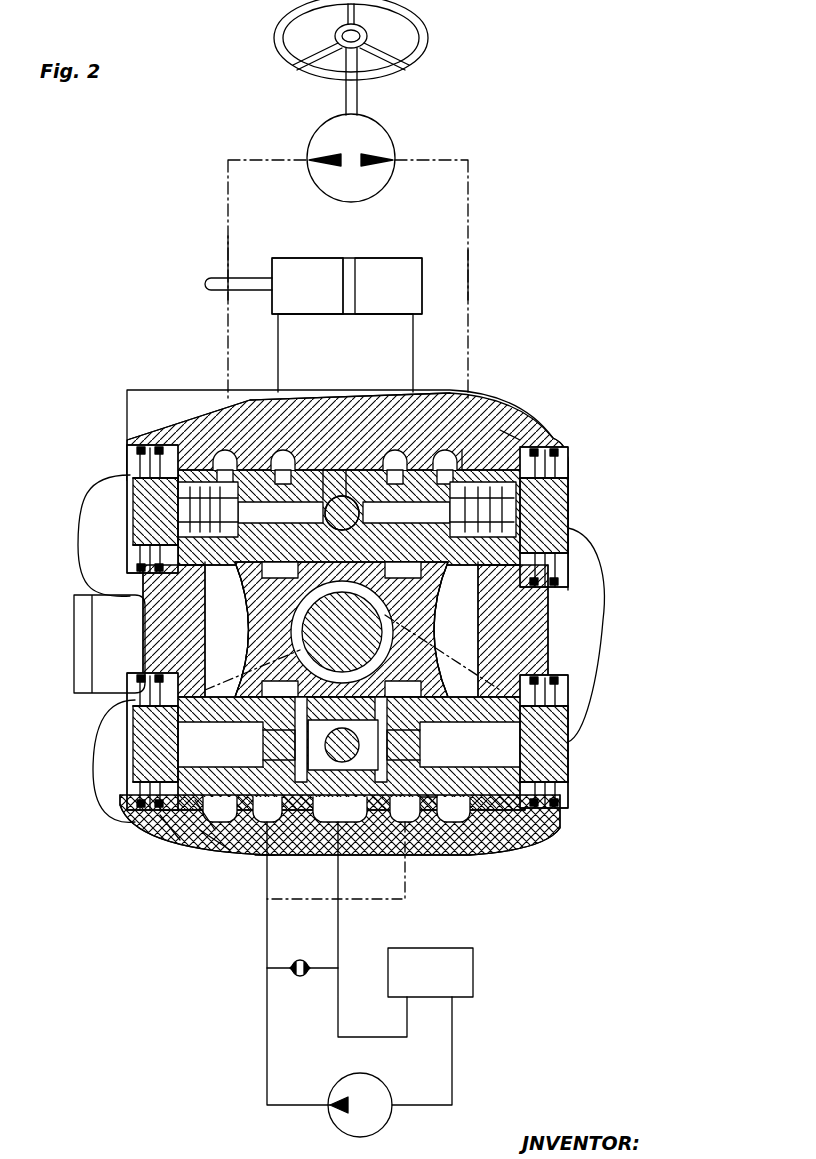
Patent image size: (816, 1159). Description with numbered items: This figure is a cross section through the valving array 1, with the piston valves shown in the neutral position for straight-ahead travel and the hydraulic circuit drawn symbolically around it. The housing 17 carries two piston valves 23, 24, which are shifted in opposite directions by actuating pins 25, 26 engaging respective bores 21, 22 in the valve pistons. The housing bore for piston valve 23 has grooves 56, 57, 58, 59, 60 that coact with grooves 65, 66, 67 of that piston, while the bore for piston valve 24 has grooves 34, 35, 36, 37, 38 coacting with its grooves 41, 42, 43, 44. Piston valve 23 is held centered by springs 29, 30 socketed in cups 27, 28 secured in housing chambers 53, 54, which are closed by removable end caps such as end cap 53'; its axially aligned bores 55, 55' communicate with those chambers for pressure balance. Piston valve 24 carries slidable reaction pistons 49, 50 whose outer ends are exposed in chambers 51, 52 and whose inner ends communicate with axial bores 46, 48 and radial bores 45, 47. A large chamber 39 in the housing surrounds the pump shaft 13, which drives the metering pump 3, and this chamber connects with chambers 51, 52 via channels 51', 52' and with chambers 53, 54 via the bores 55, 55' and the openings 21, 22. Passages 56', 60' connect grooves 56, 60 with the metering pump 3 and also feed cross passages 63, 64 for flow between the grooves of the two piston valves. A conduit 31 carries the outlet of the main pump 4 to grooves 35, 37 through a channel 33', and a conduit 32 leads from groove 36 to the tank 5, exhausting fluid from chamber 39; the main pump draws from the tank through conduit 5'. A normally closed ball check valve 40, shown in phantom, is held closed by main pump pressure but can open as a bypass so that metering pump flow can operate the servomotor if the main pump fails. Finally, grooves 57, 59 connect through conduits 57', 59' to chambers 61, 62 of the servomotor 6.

The valving array 1 is at (550, 390).
The metering pump 3 is at (402, 120).
The main pump 4 is at (385, 1083).
The tank 5 is at (469, 963).
The conduit 5' is at (454, 1051).
The servomotor 6 is at (400, 241).
The pump shaft 13 is at (436, 613).
The housing 17 is at (520, 433).
The bore of valve piston 21 is at (242, 610).
The bore of valve piston 22 is at (312, 806).
The piston valve 23 is at (346, 470).
The piston valve 24 is at (175, 835).
The actuating pin 25 is at (362, 458).
The actuating pin 26 is at (345, 832).
The cup 27 is at (142, 483).
The cup 28 is at (560, 490).
The spring 29 is at (172, 507).
The spring 30 is at (516, 517).
The conduit 31 is at (265, 1007).
The conduit 32 is at (335, 1022).
The channel 33' is at (352, 885).
The groove 34 is at (205, 810).
The groove 35 is at (272, 812).
The groove 36 is at (336, 800).
The groove 37 is at (455, 833).
The groove 38 is at (530, 838).
The chamber 39 is at (341, 629).
The ball check valve 40 is at (300, 960).
The groove 41 is at (150, 732).
The groove 42 is at (262, 870).
The groove 43 is at (395, 840).
The groove 44 is at (567, 745).
The radial bore 45 is at (226, 848).
The axial bore 46 is at (248, 822).
The radial bore 47 is at (420, 836).
The axial bore 48 is at (475, 832).
The reaction piston 49 is at (226, 744).
The reaction piston 50 is at (456, 744).
The chamber 51 is at (91, 741).
The channel 51' is at (90, 706).
The chamber 52 is at (600, 741).
The channel 52' is at (603, 673).
The housing chamber 53 is at (94, 487).
The end cap 53' is at (94, 532).
The housing chamber 54 is at (556, 468).
The axial bore 55 is at (280, 514).
The axial bore 55' is at (406, 514).
The groove 56 is at (182, 439).
The passage 56' is at (77, 639).
The groove 57 is at (297, 409).
The conduit 57' is at (221, 273).
The groove 58 is at (323, 455).
The groove 59 is at (437, 413).
The conduit 59' is at (409, 324).
The groove 60 is at (528, 377).
The passage 60' is at (603, 539).
The chamber 61 is at (302, 270).
The chamber 62 is at (382, 272).
The cross passage 63 is at (225, 650).
The cross passage 64 is at (452, 637).
The groove 65 is at (232, 445).
The groove 66 is at (375, 455).
The groove 67 is at (472, 452).